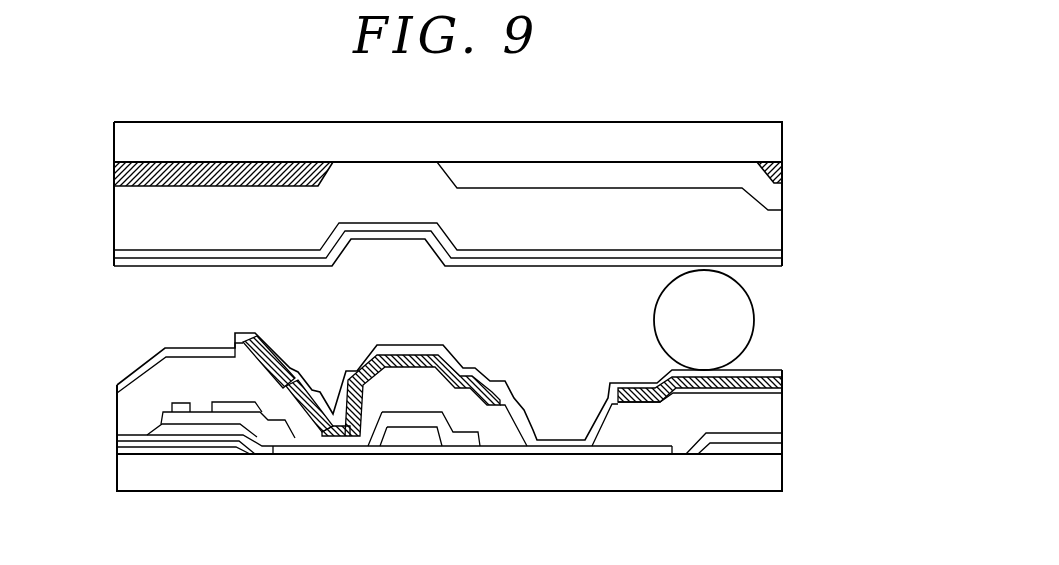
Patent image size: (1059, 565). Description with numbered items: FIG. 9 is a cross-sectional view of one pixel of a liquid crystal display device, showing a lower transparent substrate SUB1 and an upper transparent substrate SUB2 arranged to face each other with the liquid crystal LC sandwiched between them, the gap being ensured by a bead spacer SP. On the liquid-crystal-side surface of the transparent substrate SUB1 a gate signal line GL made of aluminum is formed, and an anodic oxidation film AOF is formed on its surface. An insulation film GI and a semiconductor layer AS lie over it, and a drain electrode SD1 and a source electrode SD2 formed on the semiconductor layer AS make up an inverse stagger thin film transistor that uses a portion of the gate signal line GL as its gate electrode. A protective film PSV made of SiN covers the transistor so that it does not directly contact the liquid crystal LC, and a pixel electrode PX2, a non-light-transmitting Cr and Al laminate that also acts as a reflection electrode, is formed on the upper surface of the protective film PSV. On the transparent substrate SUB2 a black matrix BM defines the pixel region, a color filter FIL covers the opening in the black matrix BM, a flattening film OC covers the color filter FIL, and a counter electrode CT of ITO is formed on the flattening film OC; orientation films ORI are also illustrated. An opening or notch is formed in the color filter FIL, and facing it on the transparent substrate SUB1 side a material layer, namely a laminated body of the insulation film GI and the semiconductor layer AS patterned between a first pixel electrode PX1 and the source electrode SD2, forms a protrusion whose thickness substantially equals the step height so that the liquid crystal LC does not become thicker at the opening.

The transparent substrate SUB1 is at (648, 475).
The transparent substrate SUB2 is at (632, 146).
The black matrix BM is at (223, 168).
The color filter FIL is at (483, 163).
The flattening film OC is at (772, 235).
The counter electrode CT is at (770, 257).
The orientation film ORI is at (771, 268).
The spacer SP is at (752, 320).
The liquid crystal LC is at (596, 308).
The gate signal line GL is at (196, 455).
The anodic oxidation film AOF is at (118, 442).
The insulation film GI is at (163, 432).
The semiconductor layer AS is at (197, 420).
The drain electrode SD1 is at (182, 400).
The source electrode SD2 is at (240, 405).
The first pixel electrode PX1 is at (420, 455).
The pixel electrode PX2 is at (492, 377).
The protective film PSV is at (147, 388).